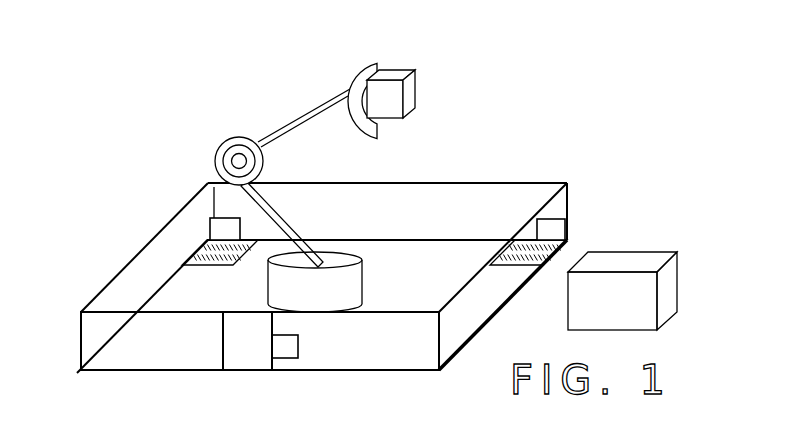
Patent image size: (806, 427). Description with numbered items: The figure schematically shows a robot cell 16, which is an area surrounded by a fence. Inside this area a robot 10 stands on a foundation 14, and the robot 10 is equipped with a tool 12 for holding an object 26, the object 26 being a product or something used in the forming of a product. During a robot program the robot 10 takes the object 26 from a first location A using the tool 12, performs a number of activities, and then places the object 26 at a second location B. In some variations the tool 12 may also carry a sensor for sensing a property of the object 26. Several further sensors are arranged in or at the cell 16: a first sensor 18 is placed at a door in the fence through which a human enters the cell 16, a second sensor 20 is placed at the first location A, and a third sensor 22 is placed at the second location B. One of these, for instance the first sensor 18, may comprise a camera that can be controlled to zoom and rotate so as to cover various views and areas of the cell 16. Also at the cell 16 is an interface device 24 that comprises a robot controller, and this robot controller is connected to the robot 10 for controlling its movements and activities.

The robot 10 is at (303, 117).
The tool 12 is at (381, 72).
The foundation 14 is at (413, 270).
The robot cell 16 is at (142, 212).
The first sensor 18 is at (300, 347).
The second sensor 20 is at (213, 220).
The third sensor 22 is at (567, 227).
The interface device 24 is at (677, 295).
The object 26 is at (415, 97).
The first location A is at (192, 255).
The second location B is at (572, 238).